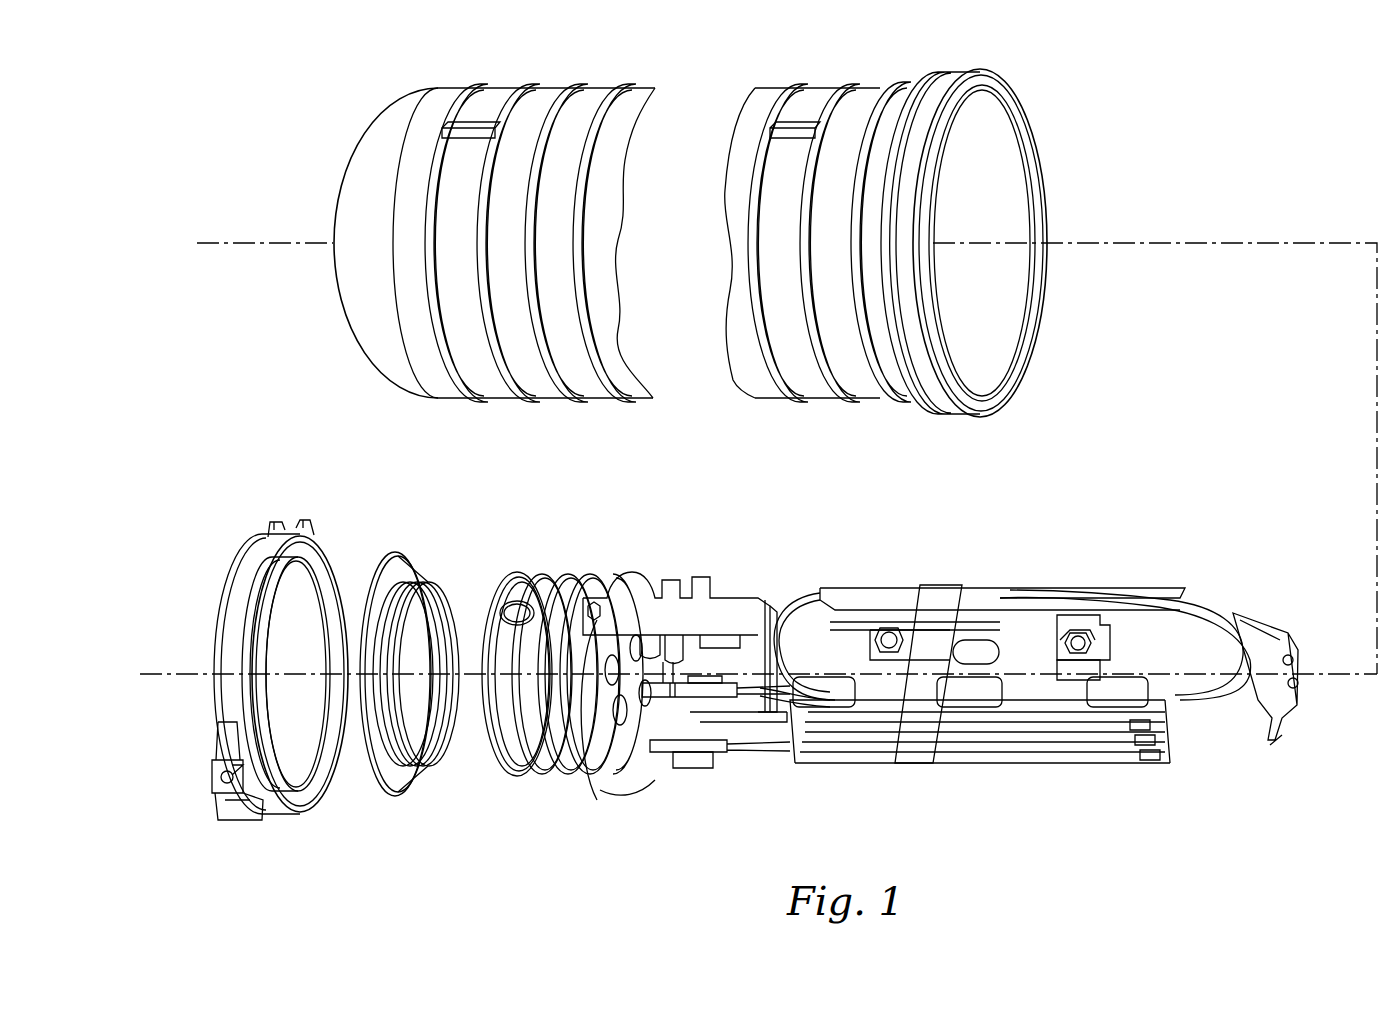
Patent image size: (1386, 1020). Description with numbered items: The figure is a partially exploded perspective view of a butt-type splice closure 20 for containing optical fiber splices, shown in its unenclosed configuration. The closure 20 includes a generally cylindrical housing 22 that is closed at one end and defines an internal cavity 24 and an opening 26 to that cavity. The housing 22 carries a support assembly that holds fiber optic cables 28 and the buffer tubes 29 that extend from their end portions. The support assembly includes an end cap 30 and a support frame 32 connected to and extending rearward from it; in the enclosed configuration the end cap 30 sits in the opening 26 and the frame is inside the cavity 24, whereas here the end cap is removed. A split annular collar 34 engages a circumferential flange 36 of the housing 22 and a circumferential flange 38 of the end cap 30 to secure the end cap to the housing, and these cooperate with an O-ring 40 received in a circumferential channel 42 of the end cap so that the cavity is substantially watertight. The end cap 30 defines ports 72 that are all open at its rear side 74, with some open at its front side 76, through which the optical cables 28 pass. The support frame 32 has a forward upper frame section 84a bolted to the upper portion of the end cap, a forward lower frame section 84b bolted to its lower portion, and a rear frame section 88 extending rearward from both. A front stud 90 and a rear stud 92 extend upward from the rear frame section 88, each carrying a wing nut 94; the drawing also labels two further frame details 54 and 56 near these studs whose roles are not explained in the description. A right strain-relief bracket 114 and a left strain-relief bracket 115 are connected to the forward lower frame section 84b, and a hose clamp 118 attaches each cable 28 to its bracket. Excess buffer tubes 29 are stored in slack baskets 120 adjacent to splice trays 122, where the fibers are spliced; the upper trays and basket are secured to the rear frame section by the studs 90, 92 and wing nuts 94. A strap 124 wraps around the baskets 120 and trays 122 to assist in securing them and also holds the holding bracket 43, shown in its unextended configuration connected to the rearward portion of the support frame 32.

The splice closure 20 is at (1305, 198).
The housing 22 is at (370, 148).
The internal cavity 24 is at (942, 225).
The opening 26 is at (968, 170).
The fiber optic cables 28 is at (607, 795).
The buffer tubes 29 is at (1042, 594).
The end cap 30 is at (587, 577).
The support frame 32 is at (763, 598).
The split annular collar 34 is at (300, 520).
The circumferential flange 36 is at (990, 70).
The circumferential flange 38 is at (517, 668).
The O-ring 40 is at (412, 556).
The circumferential channel 42 is at (548, 577).
The holding bracket 43 is at (999, 640).
The terminal block 54 is at (1070, 660).
The terminal bracket 56 is at (1080, 640).
The ports 72 is at (602, 765).
The rear side 74 is at (630, 590).
The front side 76 is at (497, 762).
The forward upper frame section 84a is at (737, 598).
The forward lower frame section 84b is at (745, 760).
The rear frame section 88 is at (1265, 632).
The front stud 90 is at (892, 630).
The rear stud 92 is at (1100, 625).
The wing nut 94 is at (878, 650).
The right strain-relief bracket 114 is at (698, 772).
The left strain-relief bracket 115 is at (722, 678).
The hose clamp 118 is at (674, 598).
The slack baskets 120 is at (858, 588).
The splice trays 122 is at (1165, 752).
The strap 124 is at (920, 764).